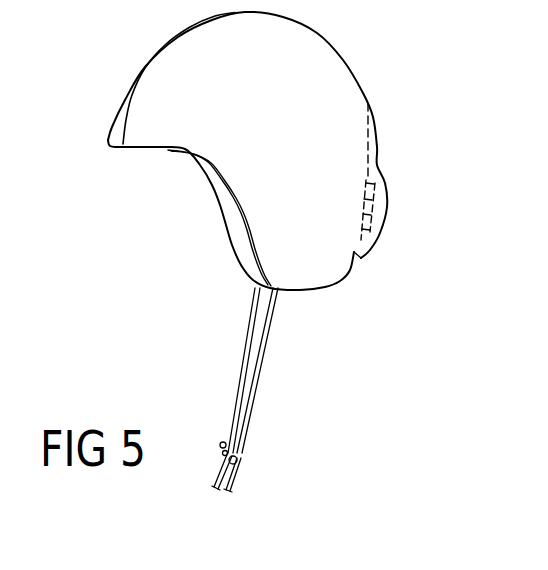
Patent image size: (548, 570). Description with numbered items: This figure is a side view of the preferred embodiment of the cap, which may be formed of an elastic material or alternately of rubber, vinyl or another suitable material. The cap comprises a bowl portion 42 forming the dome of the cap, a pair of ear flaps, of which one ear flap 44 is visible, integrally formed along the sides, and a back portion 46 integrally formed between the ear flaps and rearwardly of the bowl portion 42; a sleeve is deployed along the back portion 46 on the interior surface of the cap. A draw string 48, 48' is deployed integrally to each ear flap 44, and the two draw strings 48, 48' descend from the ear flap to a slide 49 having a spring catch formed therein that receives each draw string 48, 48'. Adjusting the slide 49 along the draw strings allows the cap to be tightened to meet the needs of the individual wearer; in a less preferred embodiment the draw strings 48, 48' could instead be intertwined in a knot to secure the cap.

The bowl portion 42 is at (263, 62).
The ear flap 44 is at (311, 243).
The back portion 46 is at (361, 258).
The draw string 48 is at (292, 370).
The draw string 48' is at (214, 370).
The slide 49 is at (238, 460).